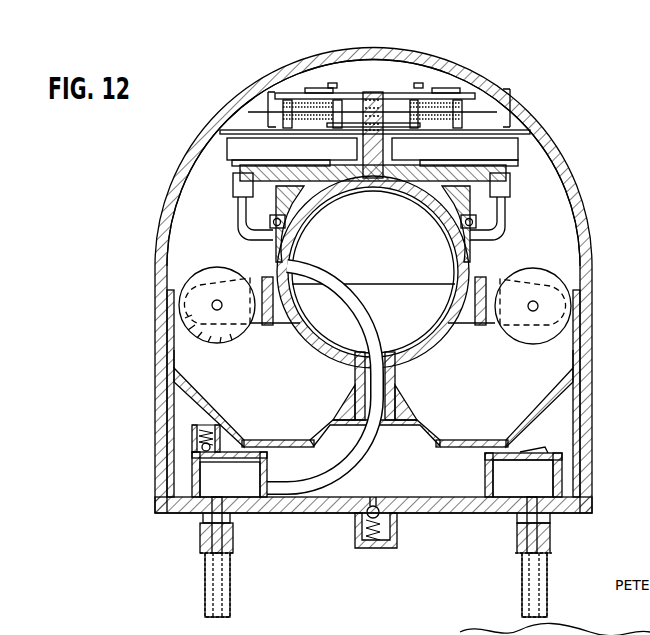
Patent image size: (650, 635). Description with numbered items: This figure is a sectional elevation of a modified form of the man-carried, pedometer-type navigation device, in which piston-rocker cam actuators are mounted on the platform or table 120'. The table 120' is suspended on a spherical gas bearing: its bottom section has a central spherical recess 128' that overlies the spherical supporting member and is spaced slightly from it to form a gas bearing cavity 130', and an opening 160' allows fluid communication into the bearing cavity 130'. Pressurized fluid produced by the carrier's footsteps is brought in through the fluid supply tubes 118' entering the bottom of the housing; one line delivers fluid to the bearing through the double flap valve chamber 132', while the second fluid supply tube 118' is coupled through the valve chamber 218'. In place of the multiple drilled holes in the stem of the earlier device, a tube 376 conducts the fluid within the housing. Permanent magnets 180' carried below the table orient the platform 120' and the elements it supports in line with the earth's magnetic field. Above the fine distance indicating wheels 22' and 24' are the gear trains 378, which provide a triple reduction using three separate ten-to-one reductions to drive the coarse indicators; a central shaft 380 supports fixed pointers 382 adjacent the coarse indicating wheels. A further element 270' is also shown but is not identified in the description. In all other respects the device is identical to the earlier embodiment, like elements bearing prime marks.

The fine distance indicating wheel 22' is at (368, 163).
The fine distance indicating wheel 24' is at (373, 280).
The gear trains 378 is at (265, 109).
The central shaft 380 is at (333, 83).
The fixed pointers 382 is at (312, 87).
The gas bearing cavity 130' is at (372, 161).
The platform or table 120' is at (509, 206).
The central spherical recess 128' is at (373, 272).
The opening 160' is at (373, 266).
The conduit 270' is at (383, 212).
The tube 376 is at (369, 330).
The permanent magnets 180' is at (375, 320).
The valve chamber 218' is at (229, 461).
The double flap chamber 132' is at (523, 472).
The fluid supply tube 118' is at (376, 557).